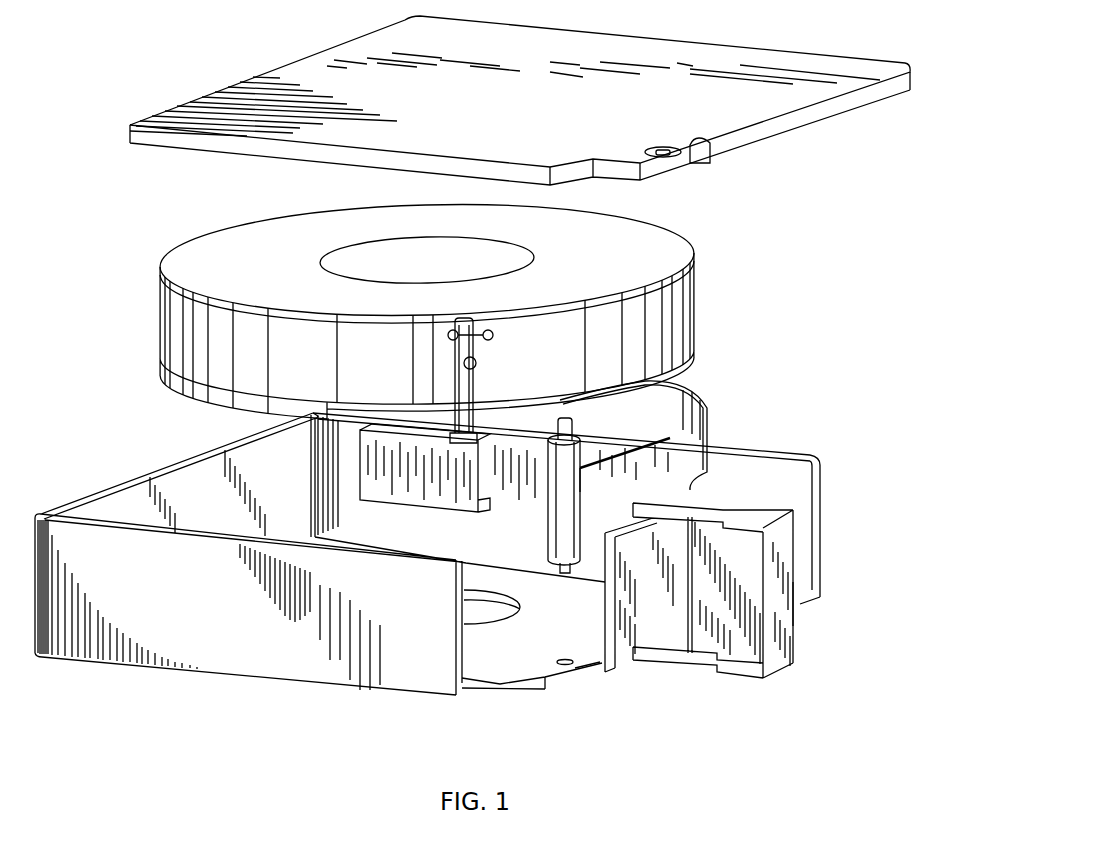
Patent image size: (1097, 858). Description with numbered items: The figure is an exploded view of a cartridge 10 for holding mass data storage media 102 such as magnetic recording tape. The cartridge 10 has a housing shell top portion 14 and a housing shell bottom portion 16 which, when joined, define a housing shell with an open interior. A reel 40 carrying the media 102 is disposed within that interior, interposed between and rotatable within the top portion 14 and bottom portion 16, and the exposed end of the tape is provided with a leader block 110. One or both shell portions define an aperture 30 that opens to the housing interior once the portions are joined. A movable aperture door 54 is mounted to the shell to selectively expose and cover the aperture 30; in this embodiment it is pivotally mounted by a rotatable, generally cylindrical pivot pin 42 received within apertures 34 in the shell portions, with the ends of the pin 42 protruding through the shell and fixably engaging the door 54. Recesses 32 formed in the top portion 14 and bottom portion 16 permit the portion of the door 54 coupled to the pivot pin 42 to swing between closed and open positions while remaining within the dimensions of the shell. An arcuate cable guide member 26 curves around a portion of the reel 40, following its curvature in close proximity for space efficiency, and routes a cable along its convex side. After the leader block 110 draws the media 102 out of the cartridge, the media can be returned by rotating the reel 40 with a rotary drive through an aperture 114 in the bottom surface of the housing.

The cartridge 10 is at (87, 87).
The housing shell top portion 14 is at (690, 60).
The housing shell bottom portion 16 is at (54, 655).
The cable guide member 26 is at (697, 441).
The aperture 30 is at (534, 649).
The recesses 32 is at (712, 149).
The apertures 34 is at (668, 151).
The reel 40 is at (673, 242).
The pivot pin 42 is at (552, 482).
The aperture door 54 is at (790, 652).
The mass data storage media 102 is at (190, 332).
The leader block 110 is at (492, 336).
The aperture 114 is at (510, 604).